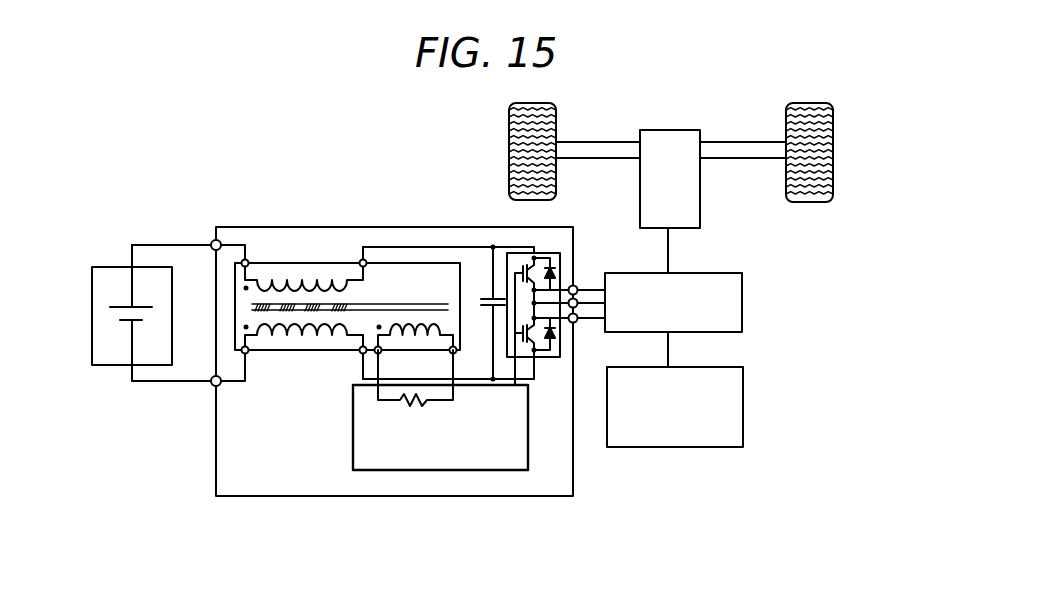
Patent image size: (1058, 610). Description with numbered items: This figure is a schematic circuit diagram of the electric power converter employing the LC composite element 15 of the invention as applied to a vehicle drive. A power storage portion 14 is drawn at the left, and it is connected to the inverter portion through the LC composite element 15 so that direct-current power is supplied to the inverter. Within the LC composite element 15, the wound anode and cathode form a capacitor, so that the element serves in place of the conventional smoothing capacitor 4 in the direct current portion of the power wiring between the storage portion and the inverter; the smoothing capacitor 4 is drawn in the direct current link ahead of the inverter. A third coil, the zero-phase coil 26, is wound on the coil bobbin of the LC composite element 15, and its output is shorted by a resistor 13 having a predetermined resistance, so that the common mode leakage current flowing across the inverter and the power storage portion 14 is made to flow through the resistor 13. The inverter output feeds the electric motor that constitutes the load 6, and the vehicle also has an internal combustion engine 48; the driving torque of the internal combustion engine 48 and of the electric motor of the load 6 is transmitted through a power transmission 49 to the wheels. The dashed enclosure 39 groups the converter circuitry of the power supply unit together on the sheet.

The smoothing capacitor 4 is at (485, 297).
The load 6 is at (733, 278).
The resistor 13 is at (400, 400).
The power storage portion 14 is at (108, 269).
The LC composite element 15 is at (292, 262).
The zero-phase coil 26 is at (408, 318).
The power supply unit 39 is at (533, 498).
The internal combustion engine 48 is at (715, 448).
The power transmission 49 is at (678, 135).